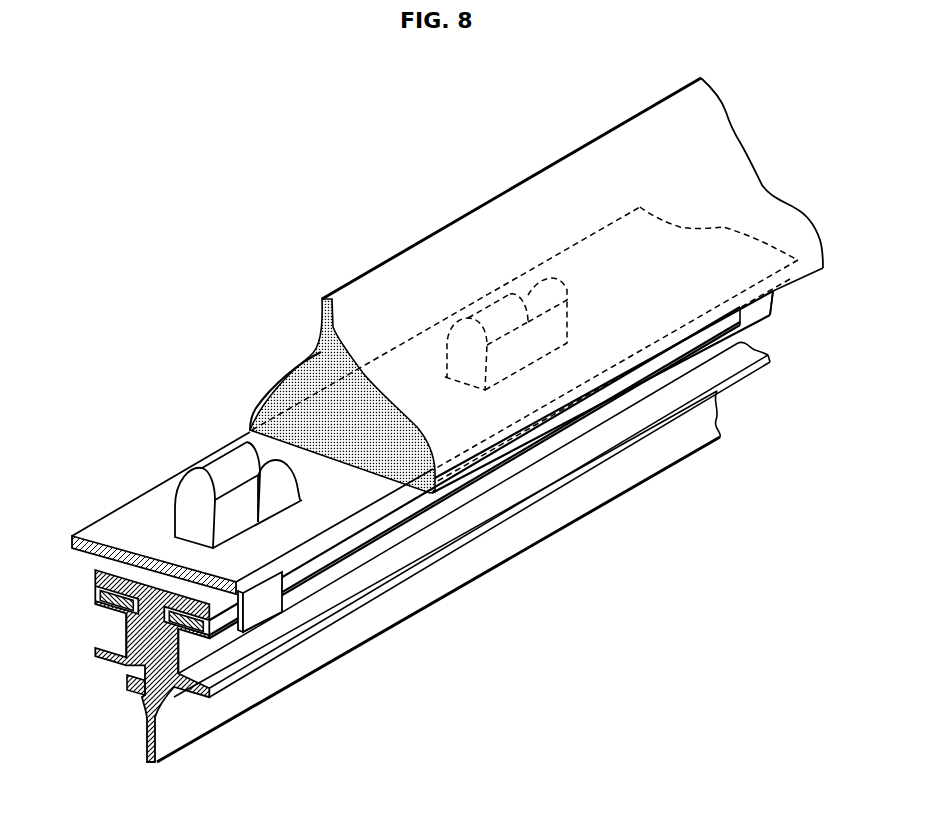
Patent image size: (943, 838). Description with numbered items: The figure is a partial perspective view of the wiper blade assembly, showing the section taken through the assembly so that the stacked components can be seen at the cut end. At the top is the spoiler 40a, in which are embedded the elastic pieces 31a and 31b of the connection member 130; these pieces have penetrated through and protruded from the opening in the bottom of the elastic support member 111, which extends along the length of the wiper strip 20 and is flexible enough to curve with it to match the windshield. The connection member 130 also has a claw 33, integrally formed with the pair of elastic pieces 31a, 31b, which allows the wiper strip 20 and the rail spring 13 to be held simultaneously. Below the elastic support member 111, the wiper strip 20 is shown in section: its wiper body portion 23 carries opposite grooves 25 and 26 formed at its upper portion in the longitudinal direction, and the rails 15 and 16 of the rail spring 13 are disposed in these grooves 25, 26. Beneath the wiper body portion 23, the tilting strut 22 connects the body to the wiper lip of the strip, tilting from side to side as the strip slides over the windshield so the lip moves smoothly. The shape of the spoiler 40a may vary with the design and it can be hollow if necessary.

The elastic support member 111 is at (110, 525).
The elastic piece 31a is at (193, 483).
The elastic piece 31b is at (232, 450).
The spoiler 40a is at (405, 257).
The groove 25 is at (95, 573).
The rail 15 is at (95, 593).
The wiper body portion 23 is at (120, 627).
The tilting strut 22 is at (126, 672).
The rail 16 is at (388, 520).
The groove 26 is at (236, 648).
The wiper strip 20 is at (147, 735).
The claw 33 is at (238, 633).
The connection member 130 is at (283, 620).
The rail spring 13 is at (775, 297).